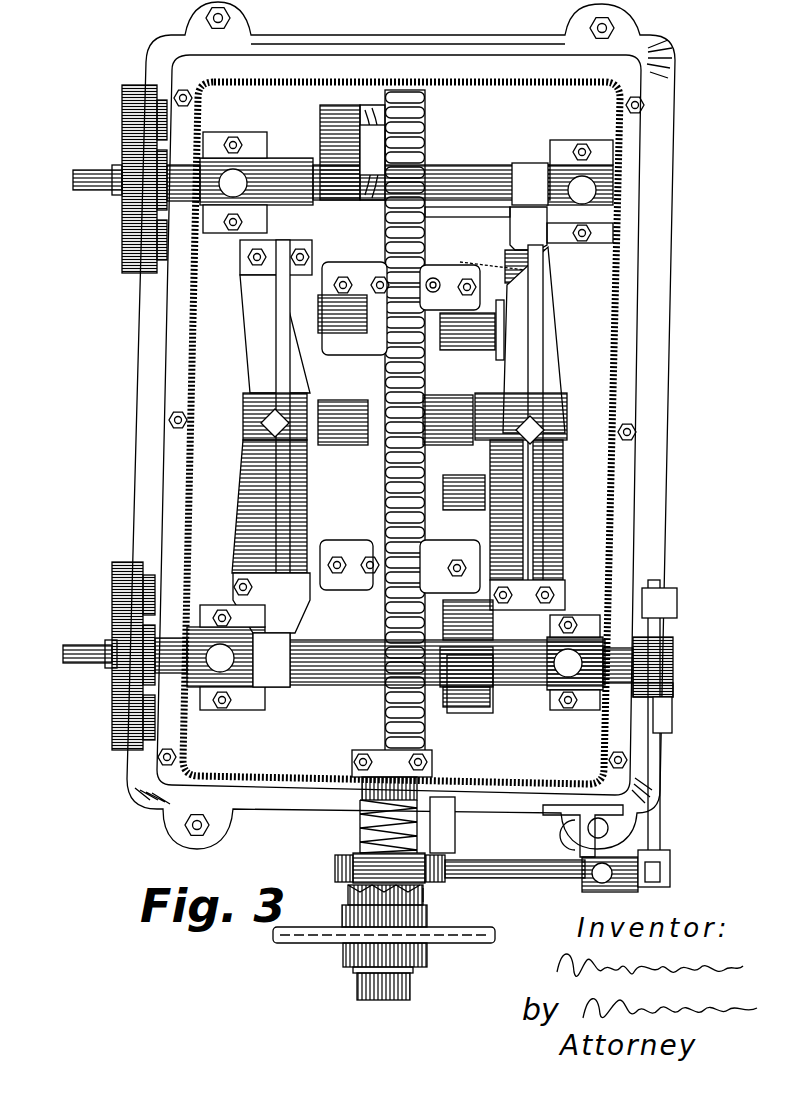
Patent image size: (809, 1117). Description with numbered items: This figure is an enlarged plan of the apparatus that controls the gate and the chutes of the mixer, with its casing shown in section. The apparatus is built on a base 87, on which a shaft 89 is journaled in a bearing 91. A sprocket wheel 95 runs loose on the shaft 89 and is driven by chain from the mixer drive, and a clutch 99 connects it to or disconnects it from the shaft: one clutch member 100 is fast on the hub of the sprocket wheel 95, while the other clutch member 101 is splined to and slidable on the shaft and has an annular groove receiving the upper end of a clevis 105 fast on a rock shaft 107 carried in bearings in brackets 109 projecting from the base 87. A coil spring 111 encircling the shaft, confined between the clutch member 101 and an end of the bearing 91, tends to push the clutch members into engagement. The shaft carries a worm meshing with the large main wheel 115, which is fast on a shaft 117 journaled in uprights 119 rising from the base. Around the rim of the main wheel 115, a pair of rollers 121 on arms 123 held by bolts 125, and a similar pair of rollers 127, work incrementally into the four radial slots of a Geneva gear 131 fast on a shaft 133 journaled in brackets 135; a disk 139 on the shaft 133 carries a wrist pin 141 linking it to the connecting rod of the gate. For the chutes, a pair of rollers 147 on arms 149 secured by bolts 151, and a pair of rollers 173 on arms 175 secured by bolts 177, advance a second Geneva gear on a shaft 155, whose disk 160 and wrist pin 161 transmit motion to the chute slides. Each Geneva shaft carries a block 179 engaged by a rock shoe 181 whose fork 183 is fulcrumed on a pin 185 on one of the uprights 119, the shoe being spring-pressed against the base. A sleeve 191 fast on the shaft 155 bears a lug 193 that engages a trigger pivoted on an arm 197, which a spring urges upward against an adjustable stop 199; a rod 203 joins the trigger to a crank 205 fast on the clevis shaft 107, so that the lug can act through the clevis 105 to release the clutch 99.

The base 87 is at (640, 524).
The shaft 89 is at (345, 893).
The bearing 91 is at (430, 772).
The sprocket wheel 95 is at (490, 940).
The clutch 99 is at (431, 897).
The clutch member 100 is at (428, 903).
The clutch member 101 is at (350, 880).
The clevis 105 is at (342, 858).
The rock shaft 107 is at (540, 866).
The bracket 109 is at (588, 836).
The coil spring 111 is at (420, 830).
The main wheel 115 is at (424, 218).
The shaft 117 is at (488, 410).
The upright 119 is at (270, 338).
The roller 121 is at (335, 120).
The arm 123 is at (378, 150).
The bolt 125 is at (428, 140).
The roller 127 is at (326, 390).
The Geneva gear 131 is at (320, 135).
The shaft 133 is at (460, 178).
The bracket 135 is at (598, 150).
The disk 139 is at (122, 130).
The wrist pin 141 is at (70, 178).
The roller 147 is at (500, 335).
The arm 149 is at (455, 352).
The bolt 151 is at (438, 350).
The shaft 155 is at (356, 686).
The disk 160 is at (112, 598).
The wrist pin 161 is at (78, 645).
The roller 173 is at (472, 730).
The arm 175 is at (440, 724).
The bolt 177 is at (388, 634).
The block 179 is at (527, 170).
The rock shoe 181 is at (520, 240).
The fork 183 is at (546, 268).
The pin 185 is at (505, 266).
The sleeve 191 is at (673, 652).
The lug 193 is at (662, 688).
The arm 197 is at (678, 612).
The adjustable stop 199 is at (670, 712).
The rod 203 is at (662, 768).
The crank 205 is at (670, 873).